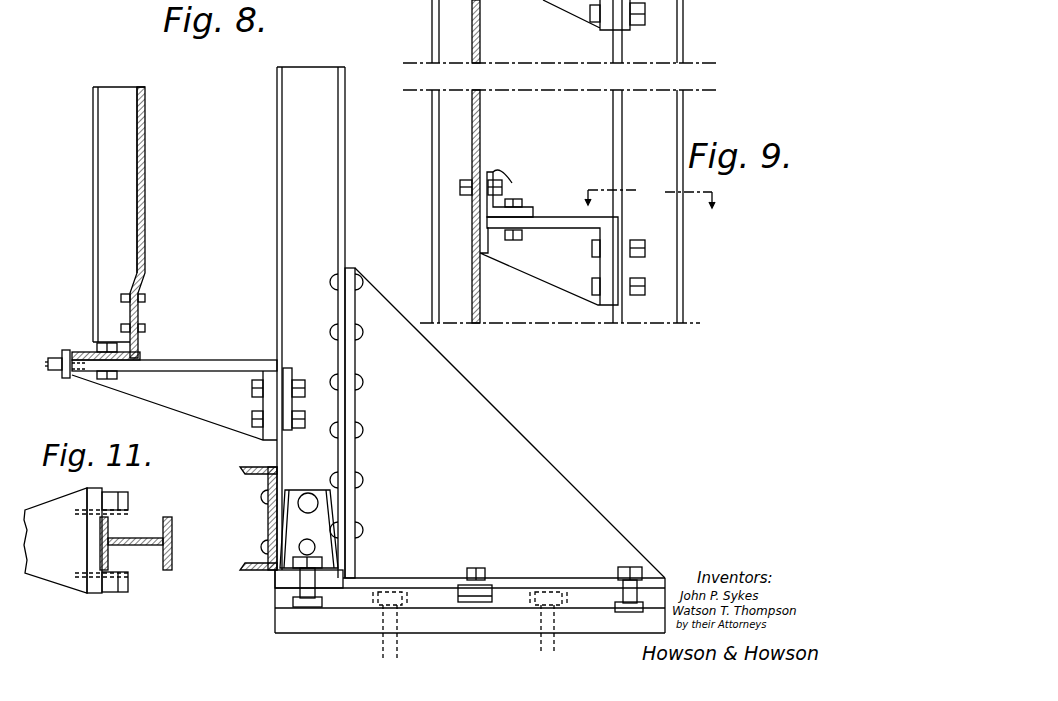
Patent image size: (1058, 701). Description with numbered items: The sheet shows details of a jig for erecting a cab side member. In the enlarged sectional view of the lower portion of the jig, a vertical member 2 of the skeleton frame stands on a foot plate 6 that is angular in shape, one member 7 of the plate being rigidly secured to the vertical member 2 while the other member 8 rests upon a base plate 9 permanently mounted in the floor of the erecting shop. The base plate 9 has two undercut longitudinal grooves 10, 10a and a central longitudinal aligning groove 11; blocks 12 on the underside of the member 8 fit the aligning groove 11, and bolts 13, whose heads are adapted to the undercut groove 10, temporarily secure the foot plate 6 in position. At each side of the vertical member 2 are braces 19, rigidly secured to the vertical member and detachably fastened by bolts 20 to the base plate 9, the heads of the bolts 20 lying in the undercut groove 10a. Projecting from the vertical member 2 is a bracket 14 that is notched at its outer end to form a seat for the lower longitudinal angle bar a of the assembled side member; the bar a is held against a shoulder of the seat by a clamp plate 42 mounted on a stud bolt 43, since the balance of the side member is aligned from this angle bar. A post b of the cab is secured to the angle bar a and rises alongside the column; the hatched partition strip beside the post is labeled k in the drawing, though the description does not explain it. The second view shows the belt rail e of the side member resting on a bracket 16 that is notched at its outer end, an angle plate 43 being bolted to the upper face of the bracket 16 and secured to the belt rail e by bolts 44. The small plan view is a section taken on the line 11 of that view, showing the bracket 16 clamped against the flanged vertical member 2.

In FIG. 8, the vertical member 2 is at (337, 233).
In FIG. 9, the vertical member 2 is at (683, 228).
In FIG. 11, the vertical member 2 is at (172, 535).
In FIG. 8, the foot plate 6 is at (510, 423).
In FIG. 8, the member of the foot plate 7 is at (351, 423).
In FIG. 8, the member of the foot plate 8 is at (470, 594).
In FIG. 8, the base plate 9 is at (275, 598).
In FIG. 8, the undercut longitudinal groove 10 is at (656, 600).
In FIG. 8, the undercut longitudinal groove 10a is at (293, 605).
In FIG. 9, the central longitudinal aligning groove 11 is at (654, 192).
In FIG. 8, the block 12 is at (480, 592).
In FIG. 8, the bolt 13 is at (628, 566).
In FIG. 8, the bracket 14 is at (233, 358).
In FIG. 9, the bracket 16 is at (562, 261).
In FIG. 11, the bracket 16 is at (76, 540).
In FIG. 8, the brace 19 is at (289, 518).
In FIG. 8, the bolt 20 is at (312, 607).
In FIG. 8, the clamp plate 42 is at (66, 378).
In FIG. 8, the stud bolt / angle plate 43 is at (48, 364).
In FIG. 9, the stud bolt / angle plate 43 is at (493, 207).
In FIG. 9, the bolt 44 is at (462, 182).
In FIG. 8, the lower longitudinal angle bar a is at (82, 353).
In FIG. 8, the post b is at (93, 213).
In FIG. 9, the post b is at (422, 161).
In FIG. 9, the belt rail e is at (507, 182).
In FIG. 8, the partition plate k is at (152, 205).
In FIG. 9, the partition plate k is at (480, 42).